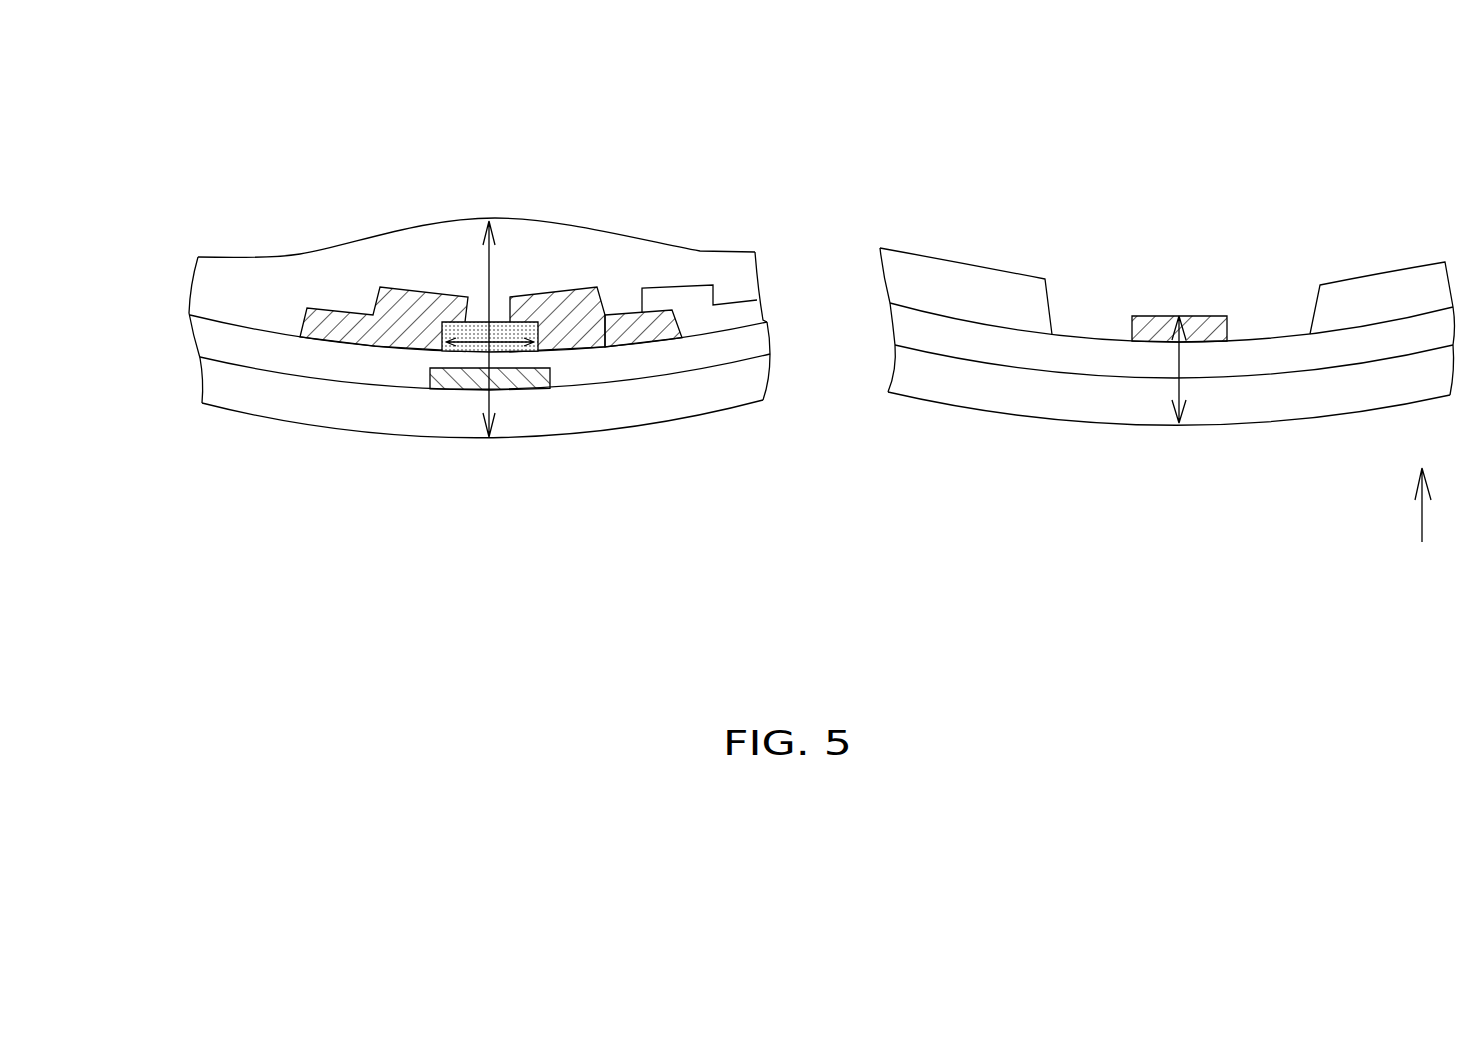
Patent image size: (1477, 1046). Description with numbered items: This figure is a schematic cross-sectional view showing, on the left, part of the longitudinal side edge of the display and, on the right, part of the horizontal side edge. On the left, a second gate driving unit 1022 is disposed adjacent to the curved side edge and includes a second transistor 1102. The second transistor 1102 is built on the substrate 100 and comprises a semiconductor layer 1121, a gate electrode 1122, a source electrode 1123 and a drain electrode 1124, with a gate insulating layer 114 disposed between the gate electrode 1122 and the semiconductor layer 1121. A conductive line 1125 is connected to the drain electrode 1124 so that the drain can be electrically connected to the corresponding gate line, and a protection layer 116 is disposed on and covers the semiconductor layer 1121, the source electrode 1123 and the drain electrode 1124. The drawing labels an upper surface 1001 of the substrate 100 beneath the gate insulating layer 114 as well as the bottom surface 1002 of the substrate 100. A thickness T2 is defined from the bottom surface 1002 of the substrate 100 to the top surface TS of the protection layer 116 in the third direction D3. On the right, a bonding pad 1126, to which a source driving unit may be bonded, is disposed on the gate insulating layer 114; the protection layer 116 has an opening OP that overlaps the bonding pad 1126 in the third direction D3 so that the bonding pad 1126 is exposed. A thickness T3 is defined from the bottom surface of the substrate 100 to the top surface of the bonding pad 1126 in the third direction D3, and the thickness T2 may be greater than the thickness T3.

The substrate 100 is at (775, 470).
The first surface of substrate 1001 is at (993, 396).
The bottom surface 1002 is at (647, 428).
The gate insulating layer 114 is at (223, 338).
The protection layer 116 is at (821, 188).
The top surface TS is at (600, 230).
The second gate driving unit 1022 is at (476, 149).
The second transistor 1102 is at (513, 245).
The semiconductor layer 1121 is at (478, 327).
The gate electrode 1122 is at (463, 380).
The source electrode 1123 is at (413, 306).
The drain electrode 1124 is at (554, 305).
The conductive line 1125 is at (687, 325).
The bonding pad 1126 is at (1155, 314).
The thickness T2 is at (493, 402).
The thickness T3 is at (1182, 365).
The opening OP is at (1300, 282).
The third direction D3 is at (1443, 505).